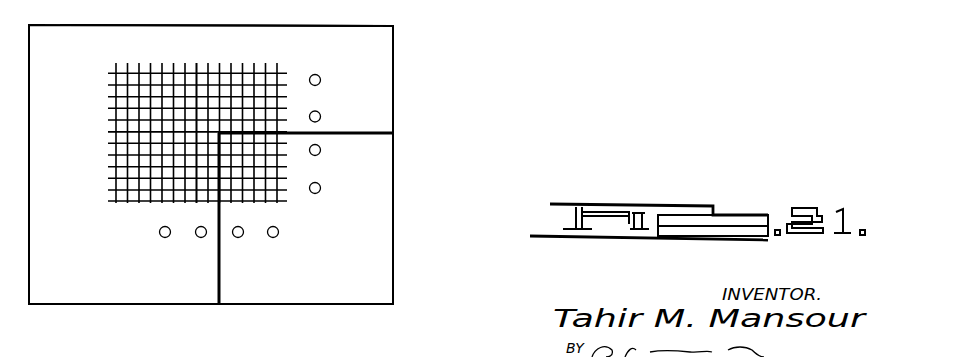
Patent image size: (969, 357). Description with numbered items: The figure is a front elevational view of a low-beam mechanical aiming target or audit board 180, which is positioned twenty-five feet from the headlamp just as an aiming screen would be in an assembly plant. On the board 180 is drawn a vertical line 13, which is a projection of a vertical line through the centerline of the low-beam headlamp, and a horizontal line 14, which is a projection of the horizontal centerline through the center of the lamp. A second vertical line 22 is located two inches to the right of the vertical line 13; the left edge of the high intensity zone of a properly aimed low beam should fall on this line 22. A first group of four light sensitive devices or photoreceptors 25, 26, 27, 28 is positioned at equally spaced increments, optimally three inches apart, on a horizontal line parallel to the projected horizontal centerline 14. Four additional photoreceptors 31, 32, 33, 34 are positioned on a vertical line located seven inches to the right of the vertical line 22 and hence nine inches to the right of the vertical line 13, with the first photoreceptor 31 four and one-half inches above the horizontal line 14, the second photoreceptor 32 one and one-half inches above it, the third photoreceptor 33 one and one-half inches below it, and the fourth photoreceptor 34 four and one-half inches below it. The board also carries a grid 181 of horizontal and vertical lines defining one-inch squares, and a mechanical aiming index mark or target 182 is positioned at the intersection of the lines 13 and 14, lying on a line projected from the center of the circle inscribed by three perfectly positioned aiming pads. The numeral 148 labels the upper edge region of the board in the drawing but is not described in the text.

The vertical line 13 is at (121, 145).
The horizontal line 14 is at (341, 113).
The vertical line 22 is at (182, 245).
The photoreceptor 25 is at (132, 255).
The photoreceptor 26 is at (183, 262).
The photoreceptor 27 is at (256, 260).
The photoreceptor 28 is at (307, 254).
The photoreceptor 31 is at (342, 64).
The photoreceptor 32 is at (340, 100).
The photoreceptor 33 is at (346, 160).
The photoreceptor 34 is at (339, 203).
The frame edge 148 is at (220, 13).
The audit or target board 180 is at (211, 164).
The grid 181 is at (218, 101).
The mechanical aiming index mark 182 is at (164, 151).